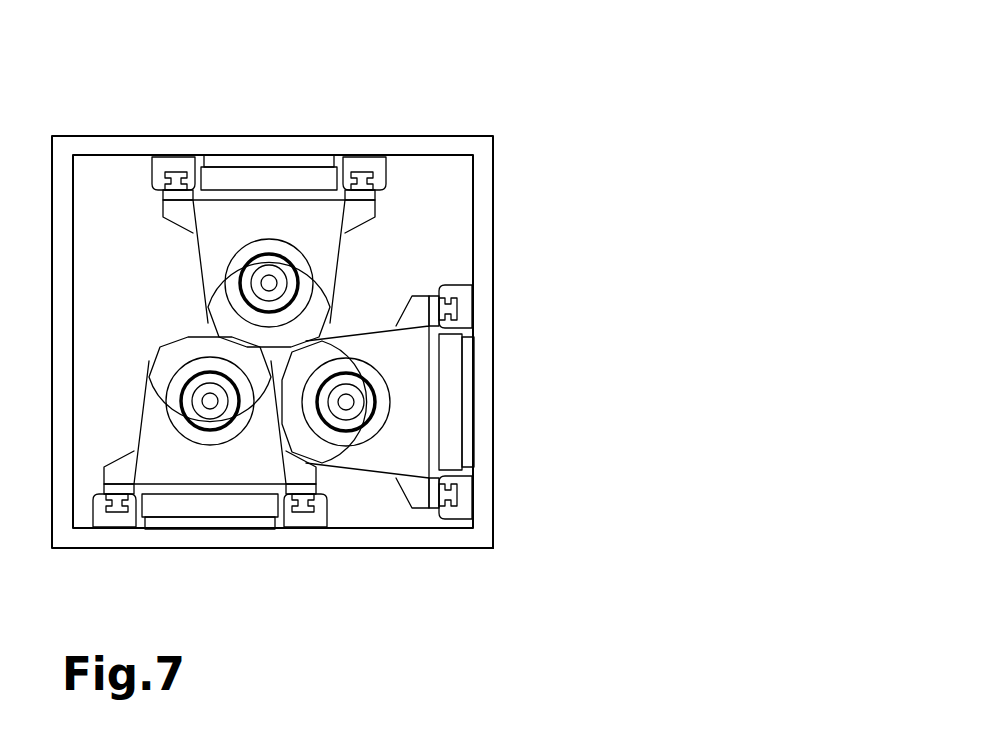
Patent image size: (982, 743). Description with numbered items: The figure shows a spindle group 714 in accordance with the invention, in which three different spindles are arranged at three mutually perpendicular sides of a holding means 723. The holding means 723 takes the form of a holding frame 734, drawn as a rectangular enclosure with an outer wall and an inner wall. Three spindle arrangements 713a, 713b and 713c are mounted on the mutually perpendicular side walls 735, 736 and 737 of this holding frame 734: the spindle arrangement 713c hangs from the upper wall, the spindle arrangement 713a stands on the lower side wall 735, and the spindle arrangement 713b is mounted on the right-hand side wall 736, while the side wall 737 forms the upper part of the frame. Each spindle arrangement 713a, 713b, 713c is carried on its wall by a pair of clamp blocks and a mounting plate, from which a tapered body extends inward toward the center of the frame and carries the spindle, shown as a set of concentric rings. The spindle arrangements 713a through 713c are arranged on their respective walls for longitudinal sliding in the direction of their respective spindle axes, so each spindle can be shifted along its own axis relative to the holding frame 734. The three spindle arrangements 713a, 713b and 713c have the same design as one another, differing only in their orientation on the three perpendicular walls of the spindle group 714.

The spindle group 714 is at (466, 112).
The side wall 737 is at (134, 146).
The side wall 735 is at (312, 548).
The holding means 723 is at (437, 545).
The holding frame 734 is at (461, 499).
The side wall 736 is at (490, 379).
The spindle arrangement 713a is at (191, 501).
The spindle arrangement 713b is at (468, 354).
The spindle arrangement 713c is at (291, 177).